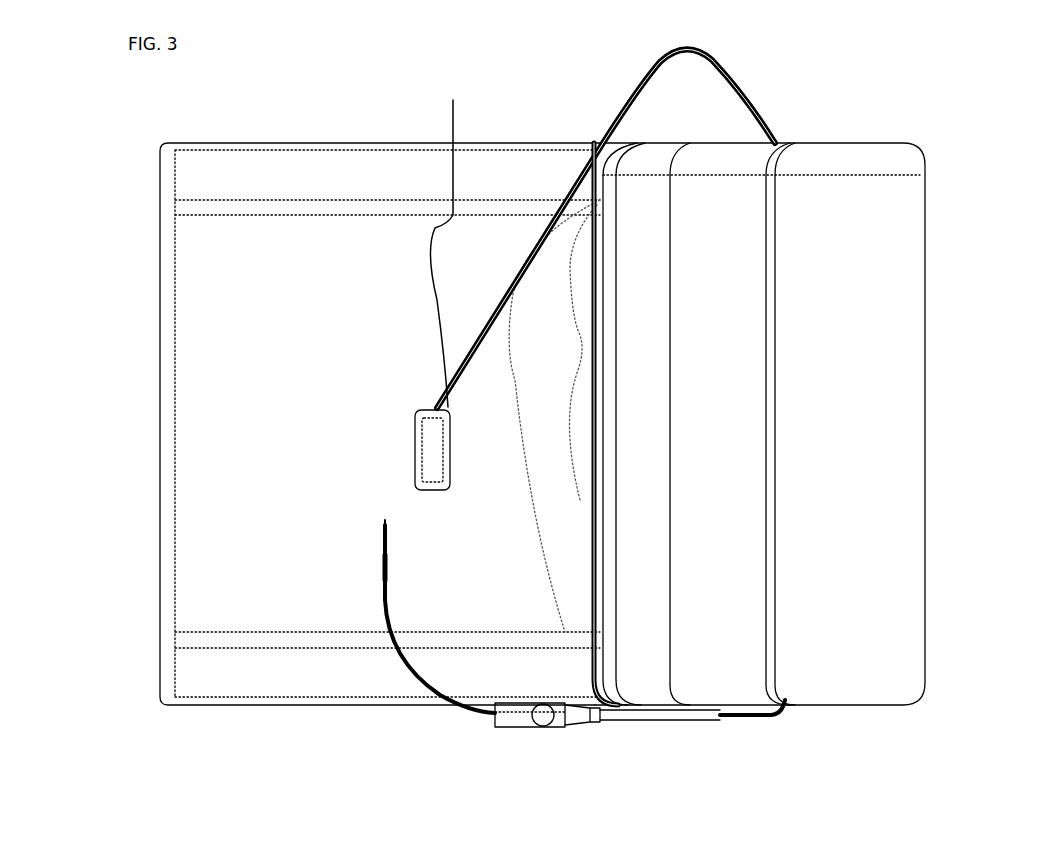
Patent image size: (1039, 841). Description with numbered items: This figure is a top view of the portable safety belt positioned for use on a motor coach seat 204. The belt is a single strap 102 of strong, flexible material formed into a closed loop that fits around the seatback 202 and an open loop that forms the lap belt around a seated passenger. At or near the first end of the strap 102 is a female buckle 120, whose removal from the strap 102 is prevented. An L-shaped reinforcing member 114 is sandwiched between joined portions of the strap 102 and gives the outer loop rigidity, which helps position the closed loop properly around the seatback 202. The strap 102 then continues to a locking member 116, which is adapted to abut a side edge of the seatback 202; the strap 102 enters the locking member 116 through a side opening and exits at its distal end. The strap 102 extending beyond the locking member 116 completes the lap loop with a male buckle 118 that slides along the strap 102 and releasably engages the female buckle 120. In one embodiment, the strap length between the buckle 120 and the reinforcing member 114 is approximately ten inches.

The motor coach seat 204 is at (340, 238).
The seatback 202 is at (850, 424).
The reinforcing member 114 is at (740, 92).
The female buckle 120 is at (425, 443).
The strap 102 is at (297, 718).
The male buckle 118 is at (380, 540).
The locking member 116 is at (518, 718).